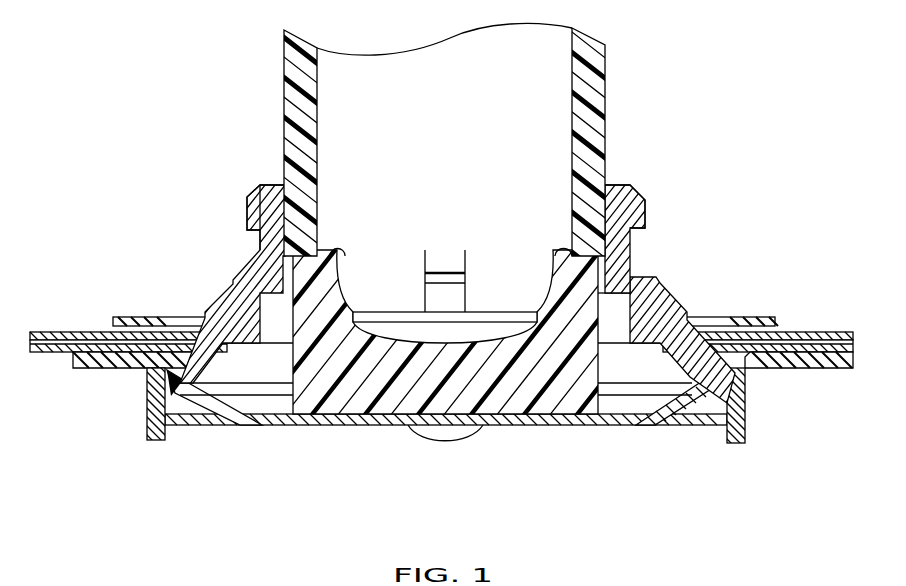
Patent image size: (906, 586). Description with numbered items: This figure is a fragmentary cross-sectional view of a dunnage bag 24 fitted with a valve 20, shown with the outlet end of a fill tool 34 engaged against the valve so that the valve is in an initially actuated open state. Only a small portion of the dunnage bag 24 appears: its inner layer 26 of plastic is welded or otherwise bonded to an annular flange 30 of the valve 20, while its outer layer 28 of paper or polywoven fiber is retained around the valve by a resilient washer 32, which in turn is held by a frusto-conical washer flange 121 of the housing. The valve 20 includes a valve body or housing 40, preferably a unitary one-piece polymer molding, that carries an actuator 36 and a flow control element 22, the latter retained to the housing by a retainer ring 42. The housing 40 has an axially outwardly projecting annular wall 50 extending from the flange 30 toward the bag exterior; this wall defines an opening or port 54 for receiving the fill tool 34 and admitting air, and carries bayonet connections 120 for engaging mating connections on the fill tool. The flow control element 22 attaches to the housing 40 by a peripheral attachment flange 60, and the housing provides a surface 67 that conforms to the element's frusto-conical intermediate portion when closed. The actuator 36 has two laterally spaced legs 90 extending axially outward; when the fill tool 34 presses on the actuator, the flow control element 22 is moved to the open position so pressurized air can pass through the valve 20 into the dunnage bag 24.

The valve 20 is at (659, 269).
The flow control element 22 is at (673, 428).
The dunnage bag 24 is at (872, 335).
The inner layer 26 is at (835, 358).
The outer layer 28 is at (827, 332).
The annular flange 30 is at (775, 370).
The resilient washer 32 is at (770, 317).
The fill tool 34 is at (616, 113).
The actuator 36 is at (340, 242).
The valve body or housing 40 is at (232, 265).
The retainer ring 42 is at (211, 433).
The annular wall 50 is at (627, 247).
The opening or port 54 is at (284, 183).
The peripheral attachment portion or flange 60 is at (167, 388).
The surface 67 is at (275, 365).
The legs 90 is at (330, 272).
The bayonet connections 120 is at (247, 212).
The washer flange 121 is at (220, 307).